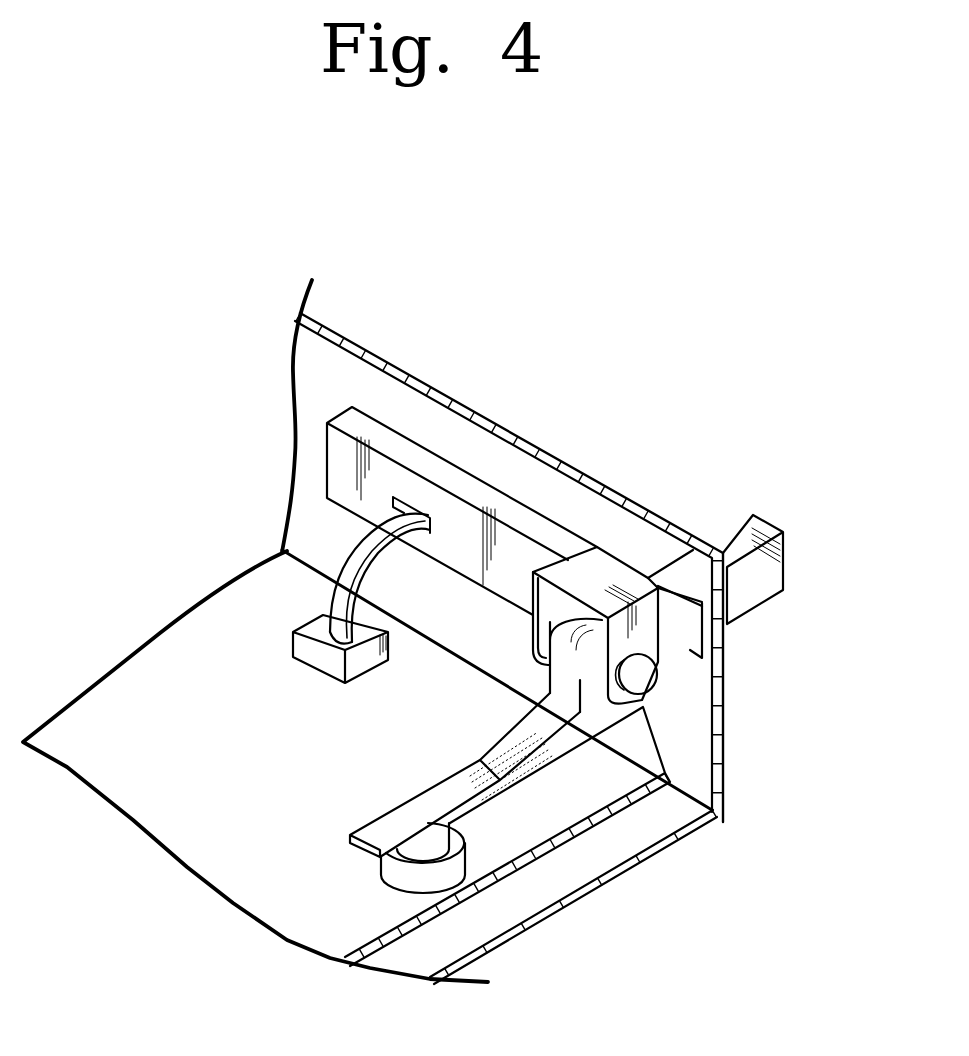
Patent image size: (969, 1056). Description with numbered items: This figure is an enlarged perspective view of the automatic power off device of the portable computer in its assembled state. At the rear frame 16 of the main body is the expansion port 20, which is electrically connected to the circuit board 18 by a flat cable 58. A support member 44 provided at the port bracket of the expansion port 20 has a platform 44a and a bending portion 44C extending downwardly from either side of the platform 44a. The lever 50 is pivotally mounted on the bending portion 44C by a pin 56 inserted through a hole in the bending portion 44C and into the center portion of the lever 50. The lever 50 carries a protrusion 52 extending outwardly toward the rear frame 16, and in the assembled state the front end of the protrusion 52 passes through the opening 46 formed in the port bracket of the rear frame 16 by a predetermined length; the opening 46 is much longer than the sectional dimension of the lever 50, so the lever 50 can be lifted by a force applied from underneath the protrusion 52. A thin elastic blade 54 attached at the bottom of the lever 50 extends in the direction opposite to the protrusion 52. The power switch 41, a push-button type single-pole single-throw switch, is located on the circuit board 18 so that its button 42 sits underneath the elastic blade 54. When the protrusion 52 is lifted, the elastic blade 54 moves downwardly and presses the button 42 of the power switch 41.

The rear frame 16 is at (397, 403).
The circuit board 18 is at (333, 909).
The expansion port 20 is at (485, 500).
The power switch 41 is at (477, 935).
The button 42 is at (427, 850).
The support member 44 is at (716, 564).
The platform 44a is at (655, 545).
The bending portion 44C is at (642, 620).
The opening 46 is at (697, 650).
The lever 50 is at (571, 744).
The protrusion 52 is at (770, 567).
The elastic blade 54 is at (403, 817).
The pin 56 is at (647, 675).
The flat cable 58 is at (352, 567).